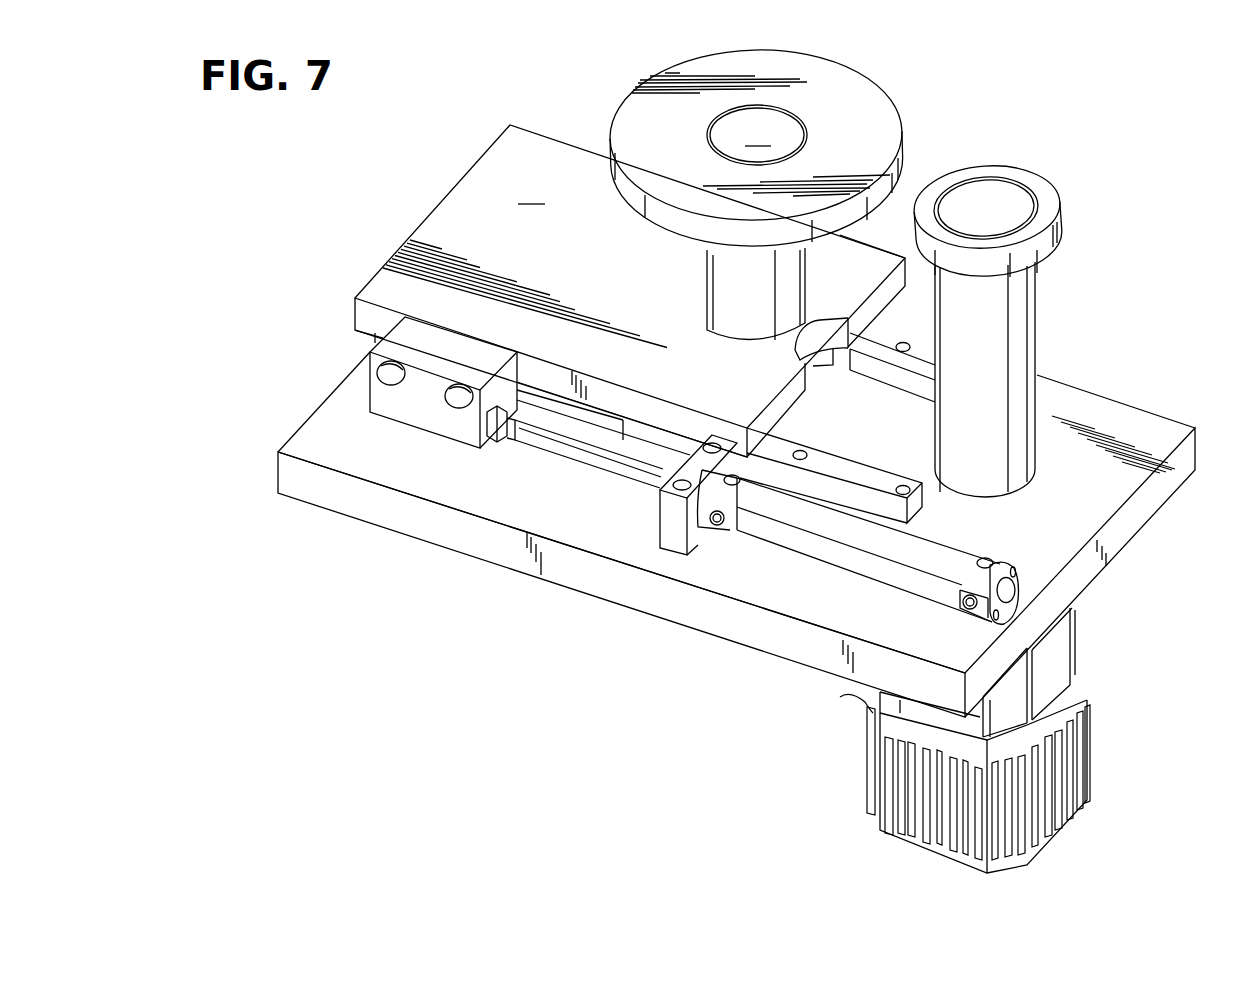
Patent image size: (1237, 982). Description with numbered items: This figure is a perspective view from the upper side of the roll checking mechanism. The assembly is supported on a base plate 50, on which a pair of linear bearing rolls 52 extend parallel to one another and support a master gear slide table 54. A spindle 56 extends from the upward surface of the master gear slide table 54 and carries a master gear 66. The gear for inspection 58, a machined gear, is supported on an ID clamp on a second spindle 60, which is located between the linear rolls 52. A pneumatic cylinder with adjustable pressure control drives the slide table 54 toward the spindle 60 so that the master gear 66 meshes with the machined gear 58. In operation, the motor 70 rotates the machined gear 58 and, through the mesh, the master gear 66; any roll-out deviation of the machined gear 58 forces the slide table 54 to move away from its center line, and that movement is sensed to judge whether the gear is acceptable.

The base plate 50 is at (1080, 402).
The linear bearing rolls 52 is at (898, 368).
The master gear slide table 54 is at (630, 291).
The spindle 56 is at (757, 135).
The gear for inspection 58 is at (1053, 238).
The second spindle 60 is at (1028, 323).
The master gear 66 is at (758, 183).
The motor 70 is at (1068, 703).